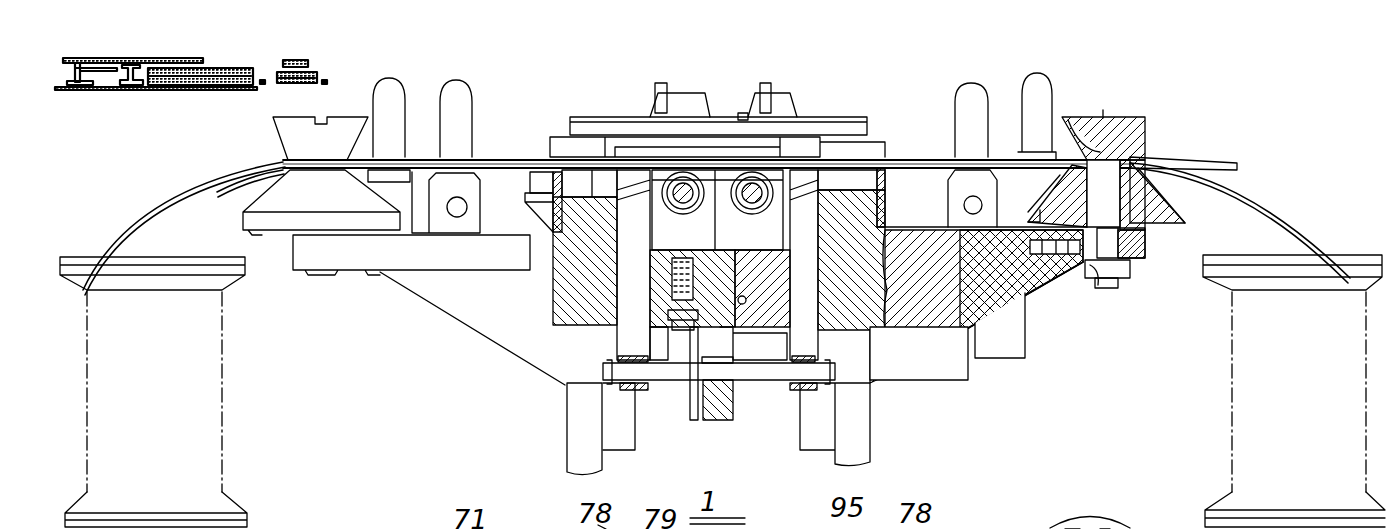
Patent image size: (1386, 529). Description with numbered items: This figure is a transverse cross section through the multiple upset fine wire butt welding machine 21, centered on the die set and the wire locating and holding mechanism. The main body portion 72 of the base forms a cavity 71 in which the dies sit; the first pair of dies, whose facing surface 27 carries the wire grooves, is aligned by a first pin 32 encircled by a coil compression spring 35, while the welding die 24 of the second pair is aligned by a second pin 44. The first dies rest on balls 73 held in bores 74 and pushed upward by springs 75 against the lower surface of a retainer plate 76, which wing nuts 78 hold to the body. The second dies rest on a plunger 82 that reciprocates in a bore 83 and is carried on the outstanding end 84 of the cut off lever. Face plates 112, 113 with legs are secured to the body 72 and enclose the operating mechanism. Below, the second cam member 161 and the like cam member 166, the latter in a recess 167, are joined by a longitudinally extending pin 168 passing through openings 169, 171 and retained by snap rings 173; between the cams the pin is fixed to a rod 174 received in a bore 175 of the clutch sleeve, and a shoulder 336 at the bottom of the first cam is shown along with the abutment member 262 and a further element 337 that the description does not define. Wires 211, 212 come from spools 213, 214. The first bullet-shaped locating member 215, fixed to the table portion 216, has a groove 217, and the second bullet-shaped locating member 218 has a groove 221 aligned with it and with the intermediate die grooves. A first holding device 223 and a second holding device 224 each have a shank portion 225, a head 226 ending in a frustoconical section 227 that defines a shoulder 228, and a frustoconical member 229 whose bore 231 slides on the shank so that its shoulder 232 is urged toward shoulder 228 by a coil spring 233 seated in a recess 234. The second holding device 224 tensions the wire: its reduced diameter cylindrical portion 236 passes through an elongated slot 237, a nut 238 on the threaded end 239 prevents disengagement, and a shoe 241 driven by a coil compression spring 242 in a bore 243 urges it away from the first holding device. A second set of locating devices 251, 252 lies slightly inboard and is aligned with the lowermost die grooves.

The multiple upset fine wire butt welding machine 21 is at (467, 402).
The welding die 24 is at (808, 218).
The facing surface 27 is at (585, 261).
The first pin 32 is at (672, 230).
The coil compression spring 35 is at (715, 125).
The second pin 44 is at (728, 230).
The cavity 71 is at (790, 245).
The main body portion 72 is at (1010, 315).
The balls 73 is at (534, 244).
The bores 74 is at (560, 296).
The springs 75 is at (560, 322).
The retainer plate 76 is at (830, 140).
The wing nuts 78 is at (668, 100).
The plunger 82 is at (770, 272).
The bore 83 is at (780, 298).
The outstanding end of cut off lever 84 is at (770, 348).
The face plate 112 is at (858, 425).
The face plate 113 is at (572, 440).
The second cam member 161 is at (548, 215).
The cam member 166 is at (917, 246).
The recess 167 is at (712, 262).
The longitudinally extending pin 168 is at (742, 400).
The opening 169 is at (548, 395).
The opening 171 is at (870, 392).
The snap rings 173 is at (760, 383).
The rod 174 is at (720, 430).
The bore 175 is at (560, 368).
The wire 211 is at (205, 185).
The wire 212 is at (1278, 280).
The spool 213 is at (238, 278).
The spool 214 is at (1355, 255).
The first bullet-shaped locating member 215 is at (400, 100).
The table portion 216 is at (405, 258).
The groove 217 is at (470, 110).
The second bullet-shaped locating member 218 is at (1030, 120).
The groove 221 is at (1075, 130).
The first holding device 223 is at (226, 227).
The second holding device 224 is at (1167, 151).
The shank portion 225 is at (1175, 160).
The head 226 is at (1140, 120).
The frustoconical section 227 is at (1160, 138).
The shoulder 228 is at (1102, 118).
The frustoconical member 229 is at (1245, 200).
The bore 231 is at (1170, 208).
The shoulder 232 is at (1130, 125).
The coil spring 233 is at (1018, 245).
The recess 234 is at (1185, 188).
The reduced diameter cylindrical portion 236 is at (1145, 245).
The elongated slot 237 is at (1130, 268).
The nut 238 is at (1090, 290).
The threaded end 239 is at (1118, 285).
The shoe 241 is at (1072, 270).
The coil compression spring 242 is at (1022, 262).
The bore 243 is at (1032, 280).
The locating device 251 is at (405, 168).
The locating device 252 is at (975, 100).
The abutment member 262 is at (628, 160).
The shoulder 336 is at (685, 415).
The bracket 337 is at (665, 345).